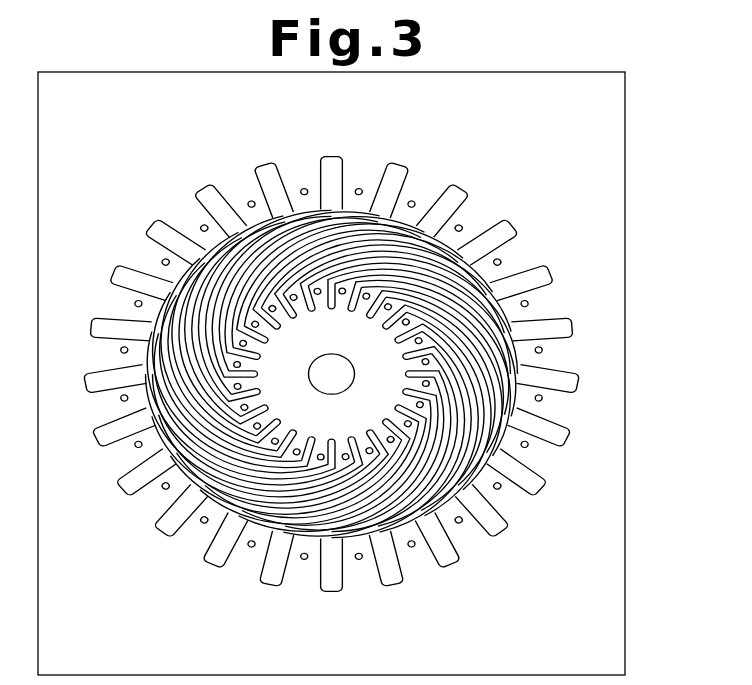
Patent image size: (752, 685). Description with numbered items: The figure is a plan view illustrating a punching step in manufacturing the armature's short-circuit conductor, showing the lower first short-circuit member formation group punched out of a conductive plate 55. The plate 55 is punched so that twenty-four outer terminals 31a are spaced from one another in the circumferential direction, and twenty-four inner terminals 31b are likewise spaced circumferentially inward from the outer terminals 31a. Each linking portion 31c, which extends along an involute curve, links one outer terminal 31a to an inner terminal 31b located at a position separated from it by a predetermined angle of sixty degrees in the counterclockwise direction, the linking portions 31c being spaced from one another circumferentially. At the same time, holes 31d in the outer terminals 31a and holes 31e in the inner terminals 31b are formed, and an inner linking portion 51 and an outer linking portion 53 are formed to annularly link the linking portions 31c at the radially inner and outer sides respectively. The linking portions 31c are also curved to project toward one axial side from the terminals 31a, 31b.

The outer terminal 31a is at (470, 226).
The inner terminal 31b is at (313, 308).
The linking portion 31c is at (328, 233).
The hole 31d is at (412, 200).
The hole 31e is at (404, 328).
The inner linking portion 51 is at (360, 436).
The outer linking portion 53 is at (577, 151).
The conductive plate 55 is at (625, 123).